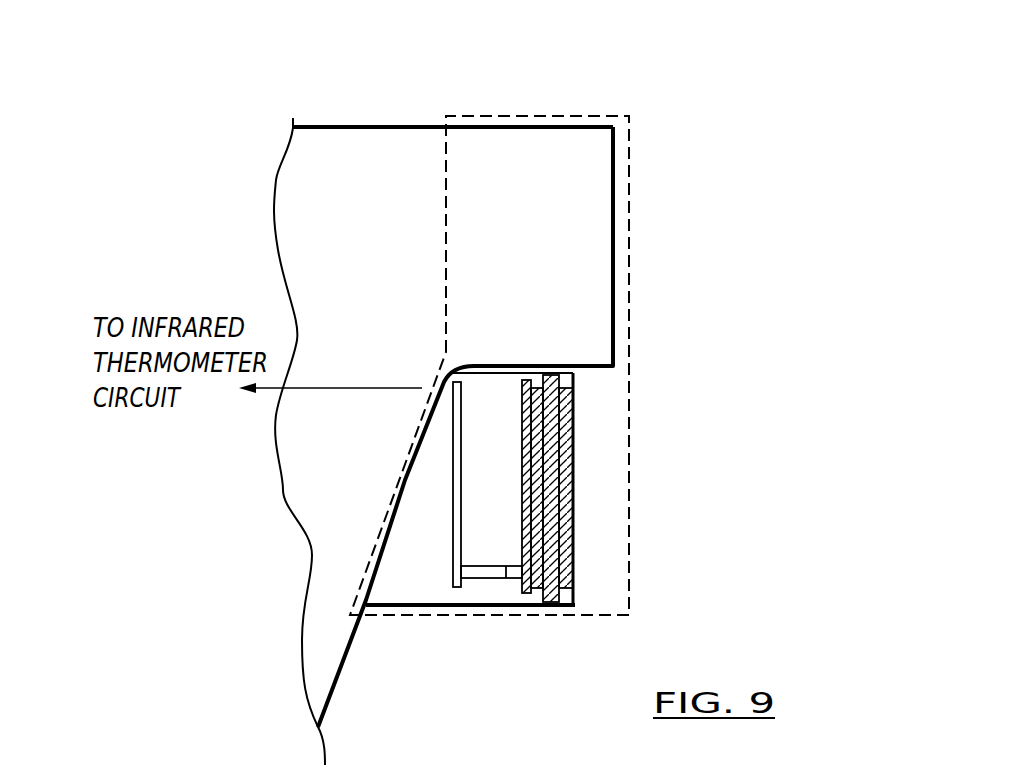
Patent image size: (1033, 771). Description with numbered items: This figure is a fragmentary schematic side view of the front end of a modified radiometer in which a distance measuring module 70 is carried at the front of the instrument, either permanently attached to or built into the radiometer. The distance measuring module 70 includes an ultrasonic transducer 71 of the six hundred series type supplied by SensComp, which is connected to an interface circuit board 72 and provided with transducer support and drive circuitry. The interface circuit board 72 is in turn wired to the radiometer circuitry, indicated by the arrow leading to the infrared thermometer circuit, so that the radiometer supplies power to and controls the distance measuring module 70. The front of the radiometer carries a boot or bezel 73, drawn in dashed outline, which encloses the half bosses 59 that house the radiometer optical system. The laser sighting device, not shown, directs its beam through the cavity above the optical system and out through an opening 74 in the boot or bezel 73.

The half bosses 59 is at (577, 205).
The distance measuring module 70 is at (388, 607).
The ultrasonic transducer 71 is at (565, 443).
The interface circuit board 72 is at (452, 527).
The boot or bezel 73 is at (631, 549).
The opening 74 is at (487, 568).